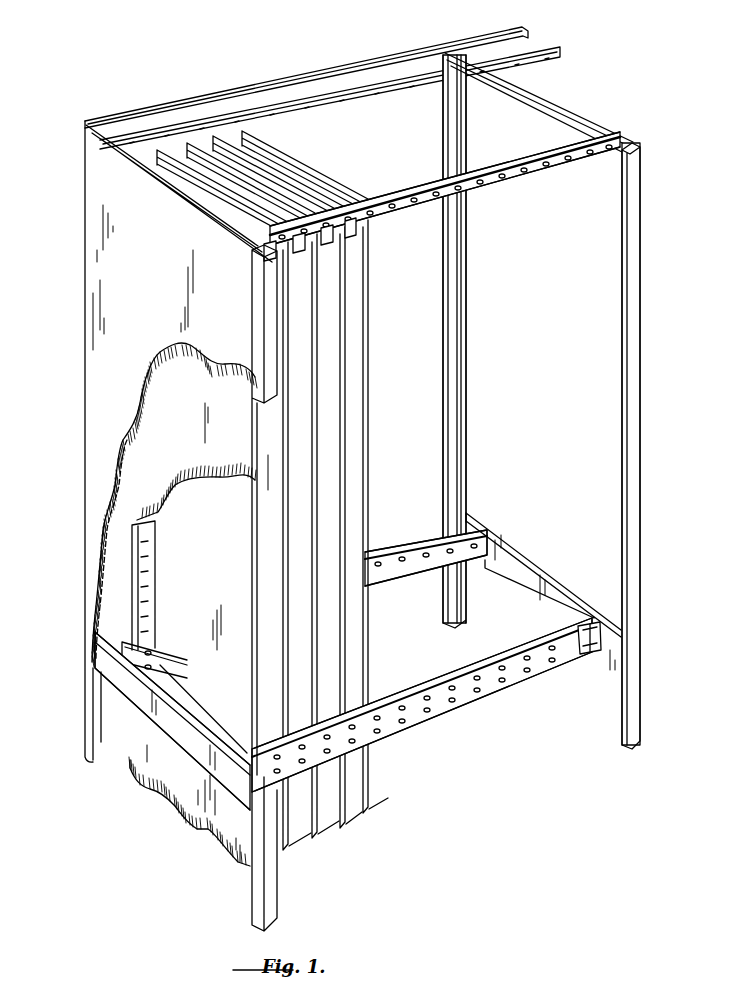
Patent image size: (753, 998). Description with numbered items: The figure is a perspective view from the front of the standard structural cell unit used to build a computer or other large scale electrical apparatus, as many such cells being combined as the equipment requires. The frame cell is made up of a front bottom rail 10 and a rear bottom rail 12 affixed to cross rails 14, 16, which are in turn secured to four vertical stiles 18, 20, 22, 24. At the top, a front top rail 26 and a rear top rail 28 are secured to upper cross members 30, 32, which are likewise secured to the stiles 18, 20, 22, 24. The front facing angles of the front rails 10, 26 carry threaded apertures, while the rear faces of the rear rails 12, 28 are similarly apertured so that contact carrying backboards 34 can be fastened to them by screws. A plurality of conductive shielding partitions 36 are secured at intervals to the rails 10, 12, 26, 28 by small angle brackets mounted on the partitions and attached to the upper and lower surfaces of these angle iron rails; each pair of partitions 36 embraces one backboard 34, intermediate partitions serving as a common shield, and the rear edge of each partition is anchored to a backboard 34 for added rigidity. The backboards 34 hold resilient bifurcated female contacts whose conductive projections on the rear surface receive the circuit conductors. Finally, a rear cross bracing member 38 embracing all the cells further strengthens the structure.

The front bottom rail 10 is at (405, 690).
The rear bottom rail 12 is at (386, 554).
The cross rail 14 is at (537, 567).
The cross rail 16 is at (205, 747).
The stile 18 is at (634, 428).
The stile 20 is at (462, 338).
The stile 22 is at (90, 705).
The stile 24 is at (257, 392).
The front top rail 26 is at (508, 165).
The rear top rail 28 is at (547, 56).
The upper cross member 30 is at (193, 200).
The upper cross member 32 is at (553, 105).
The backboard 34 is at (244, 136).
The shielding partition 36 is at (354, 393).
The rear cross bracing member 38 is at (303, 78).